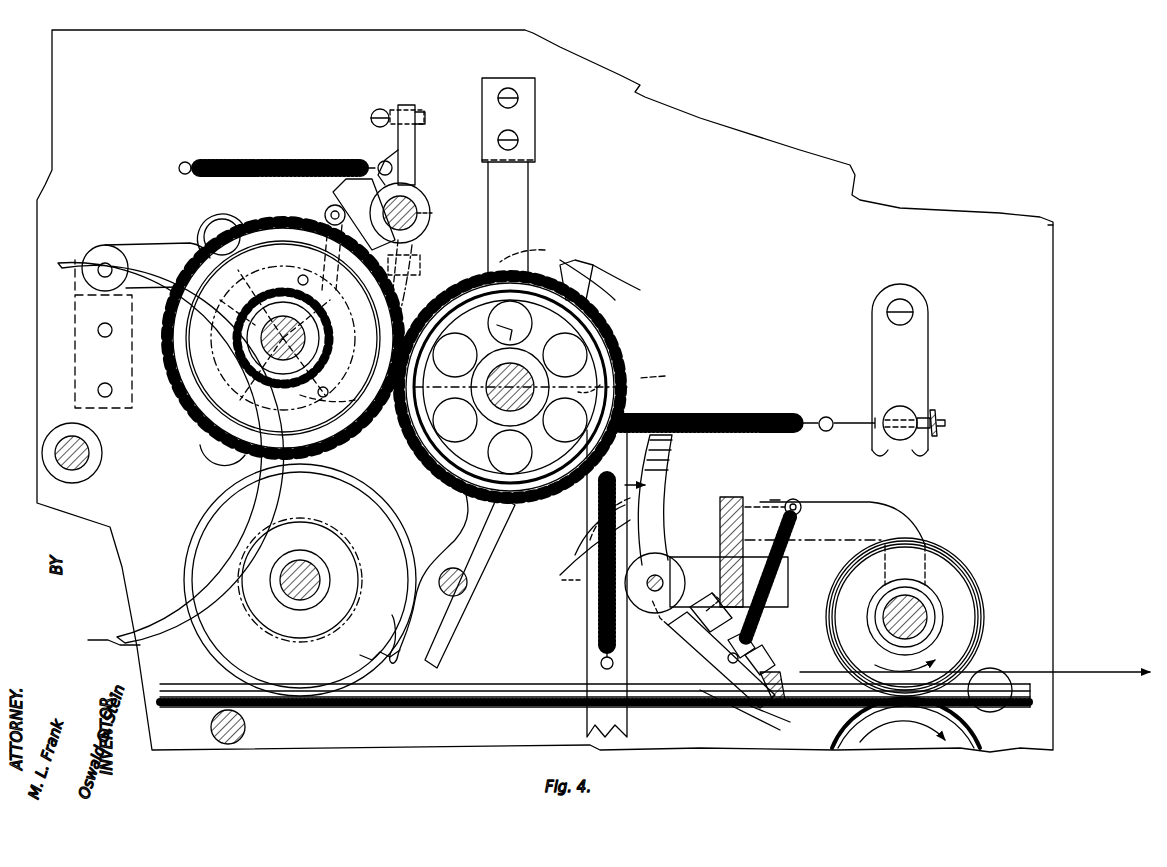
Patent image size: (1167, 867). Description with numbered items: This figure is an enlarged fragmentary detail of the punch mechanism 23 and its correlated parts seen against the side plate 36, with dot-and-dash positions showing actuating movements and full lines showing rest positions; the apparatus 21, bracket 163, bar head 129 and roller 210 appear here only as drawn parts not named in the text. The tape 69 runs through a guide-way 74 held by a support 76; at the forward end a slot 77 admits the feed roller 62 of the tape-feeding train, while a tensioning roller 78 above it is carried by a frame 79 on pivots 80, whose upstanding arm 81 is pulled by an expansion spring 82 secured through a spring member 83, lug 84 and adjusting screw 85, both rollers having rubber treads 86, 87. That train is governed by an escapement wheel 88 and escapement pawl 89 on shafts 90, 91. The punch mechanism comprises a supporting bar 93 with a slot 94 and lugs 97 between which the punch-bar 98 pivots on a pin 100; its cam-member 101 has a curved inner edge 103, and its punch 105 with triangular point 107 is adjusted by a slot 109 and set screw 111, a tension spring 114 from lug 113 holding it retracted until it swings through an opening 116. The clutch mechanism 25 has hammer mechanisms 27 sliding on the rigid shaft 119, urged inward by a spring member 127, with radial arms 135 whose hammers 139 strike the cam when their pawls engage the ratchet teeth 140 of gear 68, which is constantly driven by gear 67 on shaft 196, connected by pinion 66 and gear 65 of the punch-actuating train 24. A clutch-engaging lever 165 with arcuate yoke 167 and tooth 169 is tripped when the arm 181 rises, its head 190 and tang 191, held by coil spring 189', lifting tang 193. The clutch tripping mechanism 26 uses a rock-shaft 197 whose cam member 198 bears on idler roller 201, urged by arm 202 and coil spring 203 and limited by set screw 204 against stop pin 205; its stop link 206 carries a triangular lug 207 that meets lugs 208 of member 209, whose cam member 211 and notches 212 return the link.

The feed roller 21 is at (938, 548).
The punch mechanism 23 is at (775, 500).
The punch-actuating gear train 24 is at (160, 446).
The clutch mechanism 25 is at (606, 352).
The clutch tripping mechanism 26 is at (420, 283).
The hammer mechanism 27 is at (590, 265).
The side plate 36 is at (735, 145).
The feed roller 62 is at (960, 738).
The gear 65 is at (225, 466).
The pinion 66 is at (283, 349).
The gear 67 is at (175, 243).
The gear 68 is at (620, 300).
The tape 69 is at (1130, 690).
The guide-way 74 is at (1040, 708).
The support 76 is at (1000, 670).
The slot 77 is at (855, 712).
The tensioning roller 78 is at (962, 590).
The frame 79 is at (858, 503).
The pivot 80 is at (587, 552).
The upstanding arm 81 is at (652, 472).
The expansion spring 82 is at (735, 418).
The spring member 83 is at (915, 352).
The lug 84 is at (912, 410).
The adjusting screw 85 is at (948, 424).
The rubber tread 86 is at (985, 618).
The rubber tread 87 is at (862, 740).
The escapement wheel 88 is at (352, 519).
The escapement pawl 89 is at (483, 538).
The shaft 90 is at (320, 585).
The shaft 91 is at (468, 588).
The supporting bar 93 is at (730, 497).
The slot 94 is at (760, 570).
The lug 97 is at (711, 600).
The punch-bar 98 is at (710, 690).
The pin 100 is at (652, 595).
The cam-member 101 is at (658, 505).
The curved inner edge 103 is at (600, 520).
The punch 105 is at (760, 626).
The triangular shaped point 107 is at (782, 682).
The slot 109 is at (762, 700).
The set screw 111 is at (768, 652).
The lug 113 is at (800, 502).
The tension spring 114 is at (775, 568).
The opening 116 is at (790, 724).
The rigid shaft 119 is at (600, 385).
The spring member 127 is at (515, 193).
The bar head 129 is at (530, 140).
The radially arranged arm 135 is at (598, 290).
The hammer 139 is at (570, 262).
The ratchet tooth 140 is at (600, 325).
The bracket 163 is at (103, 334).
The clutch-engaging lever 165 is at (128, 248).
The arcuate yoke 167 is at (510, 387).
The clutch-engaging tooth 169 is at (506, 319).
The arm 181 is at (586, 650).
The coil spring 189' is at (579, 574).
The head 190 is at (625, 392).
The tang 191 is at (510, 395).
The tang 193 is at (645, 375).
The shaft 196 is at (282, 252).
The rock-shaft 197 is at (417, 212).
The cam member 198 is at (364, 213).
The idler roller 201 is at (333, 206).
The arm 202 is at (418, 168).
The coil spring 203 is at (330, 160).
The set screw 204 is at (420, 111).
The stop pin 205 is at (380, 108).
The stop link 206 is at (386, 266).
The triangular shaped lug 207 is at (327, 399).
The lug 208 is at (220, 438).
The member 209 is at (235, 225).
The roller 210 is at (228, 222).
The cam member 211 is at (238, 296).
The notch 212 is at (274, 326).